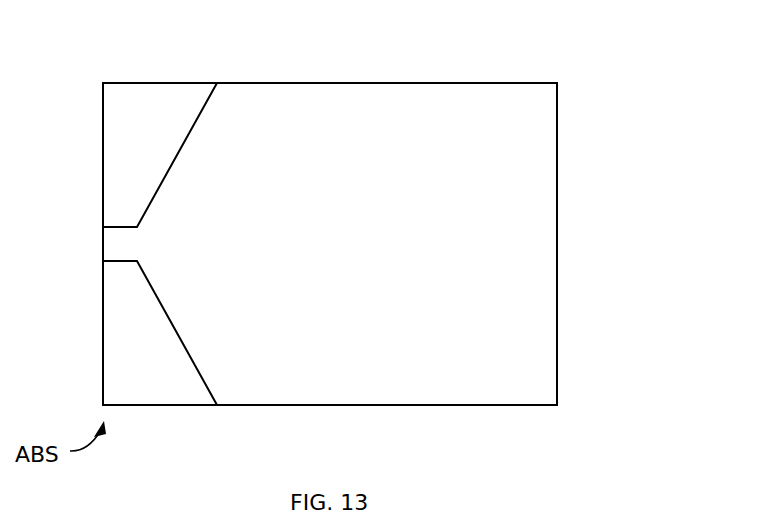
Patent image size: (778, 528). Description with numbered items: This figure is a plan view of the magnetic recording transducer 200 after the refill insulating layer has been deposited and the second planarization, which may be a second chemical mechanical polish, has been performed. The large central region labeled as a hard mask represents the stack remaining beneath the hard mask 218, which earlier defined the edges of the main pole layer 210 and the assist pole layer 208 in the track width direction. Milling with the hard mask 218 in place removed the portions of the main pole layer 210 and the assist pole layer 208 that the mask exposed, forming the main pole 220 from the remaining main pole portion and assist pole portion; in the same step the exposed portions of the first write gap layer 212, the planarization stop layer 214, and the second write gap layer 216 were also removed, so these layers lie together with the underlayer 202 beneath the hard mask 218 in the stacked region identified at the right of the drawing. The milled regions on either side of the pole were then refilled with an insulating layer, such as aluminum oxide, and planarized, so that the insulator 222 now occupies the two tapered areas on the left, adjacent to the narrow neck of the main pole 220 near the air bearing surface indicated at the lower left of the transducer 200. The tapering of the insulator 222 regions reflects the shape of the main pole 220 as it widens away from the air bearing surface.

The magnetic recording transducer 200 is at (351, 61).
The insulator 222 is at (103, 308).
The main pole 220 is at (634, 244).
The hard mask 218 is at (634, 244).
The second write gap layer 216 is at (634, 244).
The planarization stop layer 214 is at (634, 244).
The first write gap layer 212 is at (634, 244).
The main pole layer 210 is at (634, 244).
The assist pole layer 208 is at (634, 244).
The underlayer 202 is at (557, 232).